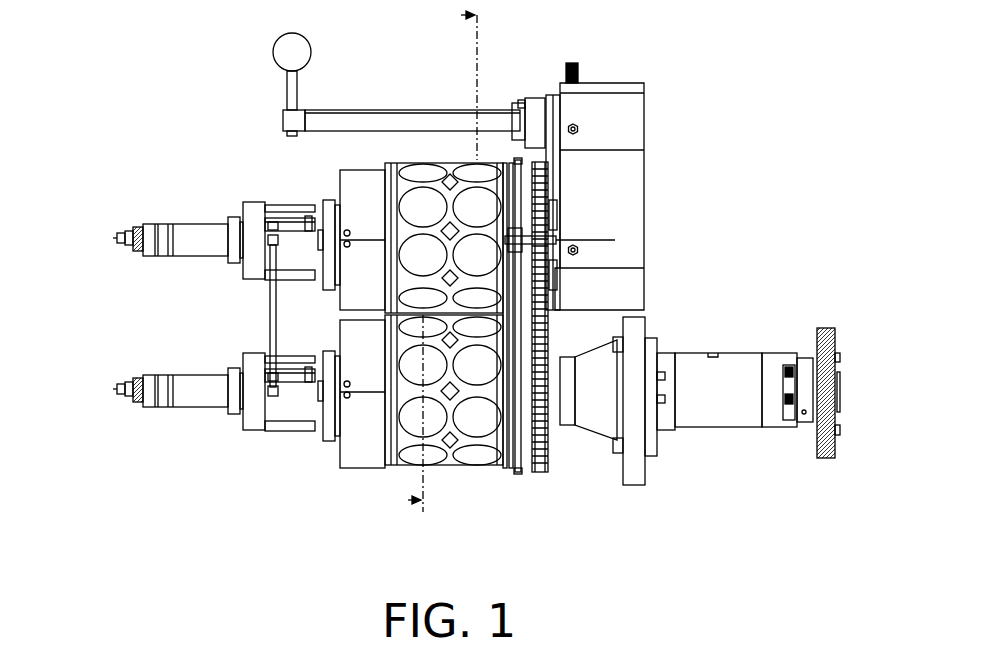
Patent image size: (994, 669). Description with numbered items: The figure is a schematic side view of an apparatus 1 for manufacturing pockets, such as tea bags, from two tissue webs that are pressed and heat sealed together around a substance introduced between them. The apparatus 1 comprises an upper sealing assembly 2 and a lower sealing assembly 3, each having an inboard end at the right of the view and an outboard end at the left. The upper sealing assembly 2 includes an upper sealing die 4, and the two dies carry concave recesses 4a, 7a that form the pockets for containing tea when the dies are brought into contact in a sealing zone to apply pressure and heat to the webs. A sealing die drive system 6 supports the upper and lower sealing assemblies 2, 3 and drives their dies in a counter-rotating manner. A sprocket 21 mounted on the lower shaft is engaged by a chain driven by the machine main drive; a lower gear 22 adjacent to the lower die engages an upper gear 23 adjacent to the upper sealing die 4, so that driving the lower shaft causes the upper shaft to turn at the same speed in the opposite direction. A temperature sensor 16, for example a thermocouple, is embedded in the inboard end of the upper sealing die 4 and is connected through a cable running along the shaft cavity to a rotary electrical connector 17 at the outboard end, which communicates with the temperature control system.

The apparatus 1 is at (778, 250).
The upper sealing assembly 2 is at (205, 170).
The lower sealing assembly 3 is at (205, 345).
The upper sealing die 4 is at (398, 160).
The concave recesses 4a is at (412, 207).
The sealing die drive system 6 is at (842, 65).
The concave recesses 7a is at (330, 430).
The temperature sensor 16 is at (600, 232).
The rotary electrical connector 17 is at (113, 236).
The sprocket 21 is at (838, 332).
The lower gear 22 is at (548, 462).
The upper gear 23 is at (560, 212).